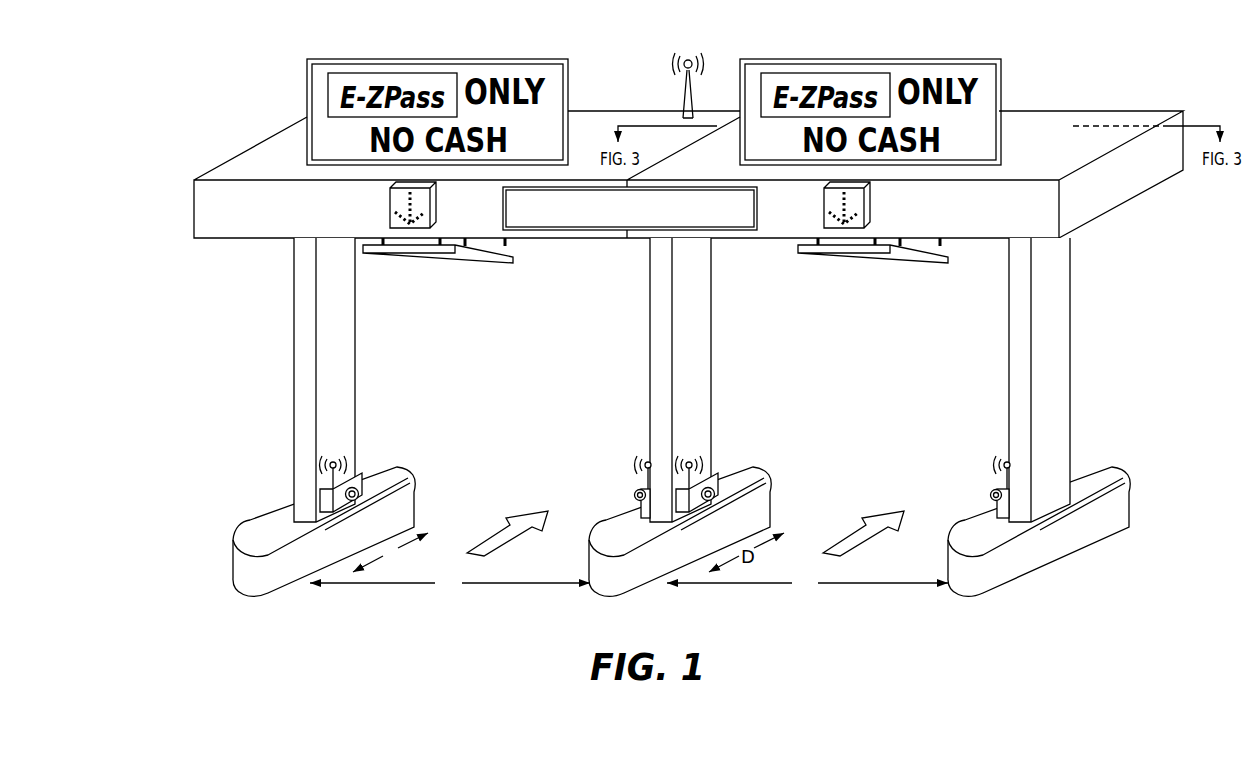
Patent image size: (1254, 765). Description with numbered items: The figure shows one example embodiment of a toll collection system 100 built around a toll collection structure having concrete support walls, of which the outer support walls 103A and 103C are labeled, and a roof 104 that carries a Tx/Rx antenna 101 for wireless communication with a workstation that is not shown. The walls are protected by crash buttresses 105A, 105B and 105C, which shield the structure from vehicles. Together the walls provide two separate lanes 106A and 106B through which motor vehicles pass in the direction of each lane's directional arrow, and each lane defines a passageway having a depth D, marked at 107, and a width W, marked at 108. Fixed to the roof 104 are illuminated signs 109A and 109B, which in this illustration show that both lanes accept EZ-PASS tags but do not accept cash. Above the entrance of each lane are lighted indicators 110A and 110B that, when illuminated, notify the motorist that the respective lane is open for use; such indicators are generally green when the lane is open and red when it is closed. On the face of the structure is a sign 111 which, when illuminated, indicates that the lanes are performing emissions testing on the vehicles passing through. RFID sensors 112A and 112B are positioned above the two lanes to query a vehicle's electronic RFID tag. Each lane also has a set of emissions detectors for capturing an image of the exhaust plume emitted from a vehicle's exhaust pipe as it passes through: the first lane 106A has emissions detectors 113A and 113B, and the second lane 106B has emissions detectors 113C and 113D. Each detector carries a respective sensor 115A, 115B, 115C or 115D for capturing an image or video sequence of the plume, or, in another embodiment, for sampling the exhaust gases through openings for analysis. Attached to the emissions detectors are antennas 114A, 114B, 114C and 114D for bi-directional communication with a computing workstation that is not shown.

The toll collection system 100 is at (268, 74).
The antenna 101 is at (693, 97).
The support wall 103A is at (337, 370).
The support wall 103C is at (1050, 372).
The roof 104 is at (277, 148).
The crash buttress 105A is at (267, 582).
The crash buttress 105B is at (622, 582).
The crash buttress 105C is at (976, 582).
The first lane 106A is at (527, 516).
The second lane 106B is at (883, 516).
The depth D 107 is at (402, 522).
The width W 108 is at (513, 576).
The illuminated sign 109A is at (568, 86).
The illuminated sign 109B is at (999, 86).
The lighted indicator 110A is at (388, 210).
The lighted indicator 110B is at (866, 208).
The sign 111 is at (592, 232).
The RFID sensor 112A is at (441, 264).
The RFID sensor 112B is at (876, 264).
The emissions detector 113A is at (350, 478).
The emissions detector 113B is at (641, 504).
The emissions detector 113C is at (707, 478).
The emissions detector 113D is at (998, 504).
The antenna 114A is at (337, 458).
The antenna 114B is at (648, 460).
The antenna 114C is at (692, 460).
The antenna 114D is at (1005, 460).
The sensor 115A is at (359, 491).
The sensor 115B is at (636, 491).
The sensor 115C is at (715, 491).
The sensor 115D is at (993, 491).